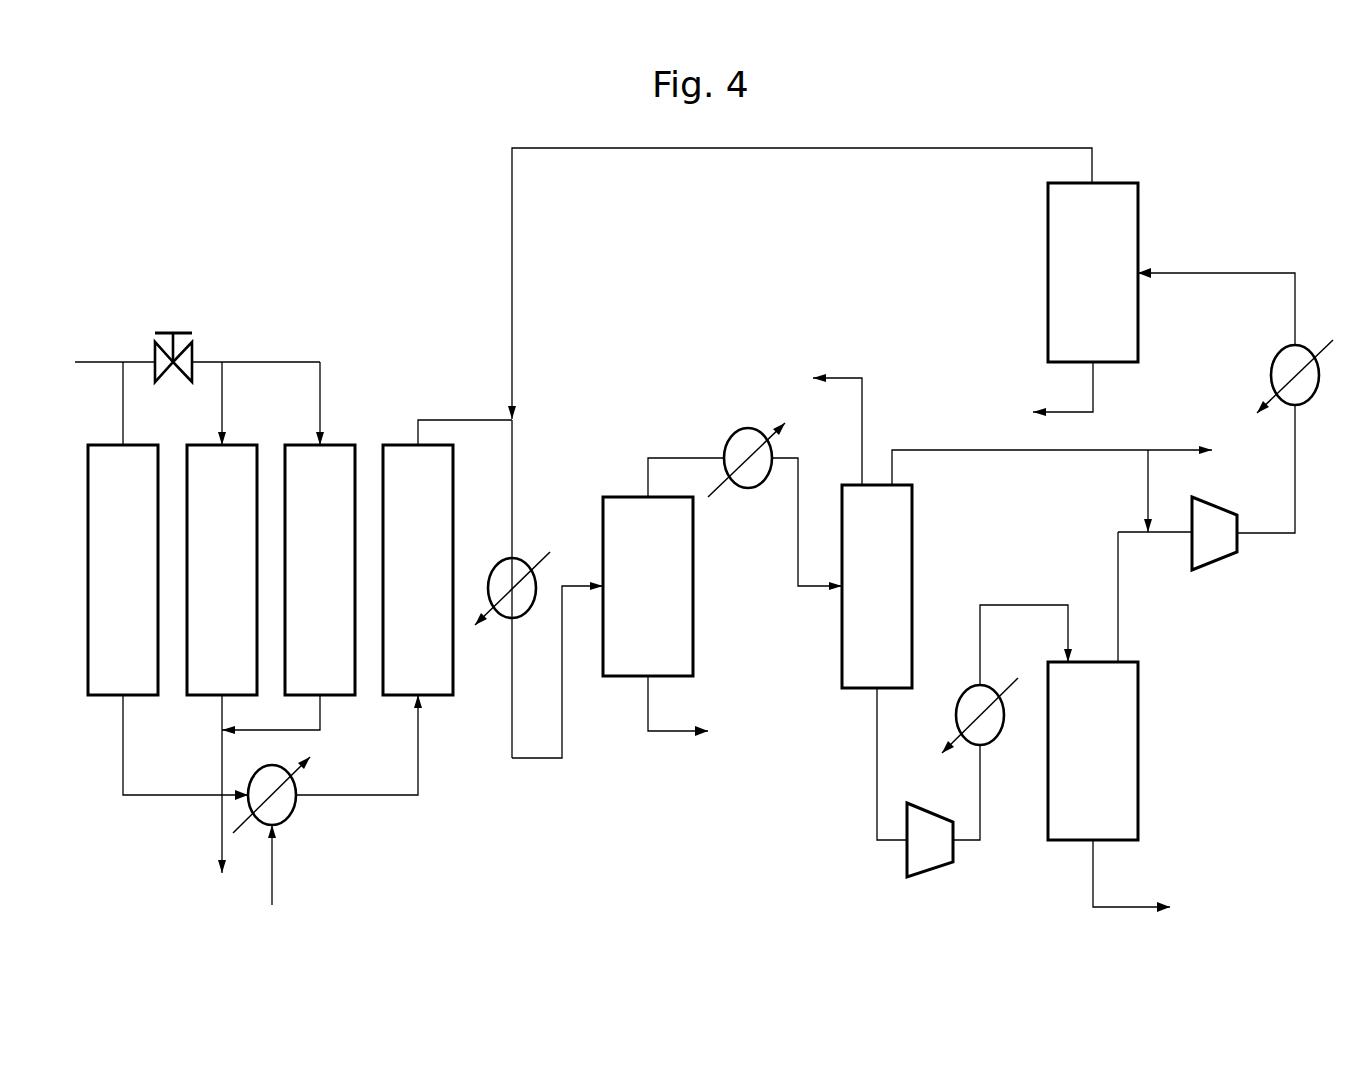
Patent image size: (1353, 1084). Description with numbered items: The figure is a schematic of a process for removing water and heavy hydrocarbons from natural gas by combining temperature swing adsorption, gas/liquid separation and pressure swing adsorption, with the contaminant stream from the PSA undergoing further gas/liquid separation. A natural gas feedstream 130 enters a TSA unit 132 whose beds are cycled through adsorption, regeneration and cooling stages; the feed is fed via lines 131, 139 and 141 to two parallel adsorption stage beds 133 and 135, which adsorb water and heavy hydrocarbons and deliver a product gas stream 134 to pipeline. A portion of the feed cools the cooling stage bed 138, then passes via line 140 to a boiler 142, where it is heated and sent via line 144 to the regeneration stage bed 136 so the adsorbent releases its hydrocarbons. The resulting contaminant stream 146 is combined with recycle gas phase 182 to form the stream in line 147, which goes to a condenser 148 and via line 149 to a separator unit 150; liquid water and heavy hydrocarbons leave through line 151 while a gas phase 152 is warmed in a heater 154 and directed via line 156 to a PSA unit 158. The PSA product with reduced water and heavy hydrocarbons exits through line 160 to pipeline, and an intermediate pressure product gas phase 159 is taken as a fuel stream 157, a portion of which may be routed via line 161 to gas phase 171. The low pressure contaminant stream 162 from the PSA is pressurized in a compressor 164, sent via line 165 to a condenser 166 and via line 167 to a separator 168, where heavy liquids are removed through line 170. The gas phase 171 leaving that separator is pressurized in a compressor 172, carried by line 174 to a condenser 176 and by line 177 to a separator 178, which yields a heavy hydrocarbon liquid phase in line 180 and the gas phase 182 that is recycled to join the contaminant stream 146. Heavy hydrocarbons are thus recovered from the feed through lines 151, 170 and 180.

The natural gas feedstream 130 is at (114, 336).
The line 131 is at (191, 346).
The TSA unit 132 is at (239, 380).
The adsorption stage bed 133 is at (222, 570).
The product gas stream 134 is at (242, 784).
The adsorption stage bed 135 is at (320, 570).
The regeneration stage bed 136 is at (418, 570).
The cooling stage bed 138 is at (123, 570).
The line 139 is at (256, 403).
The line 140 is at (156, 747).
The line 141 is at (350, 403).
The boiler 142 is at (287, 831).
The line 144 is at (359, 772).
The contaminant stream 146 is at (465, 407).
The line 147 is at (543, 589).
The condenser 148 is at (508, 571).
The line 149 is at (567, 670).
The separator unit 150 is at (679, 586).
The line 151 is at (678, 729).
The gas phase 152 is at (686, 452).
The heater 154 is at (746, 439).
The line 156 is at (790, 524).
The fuel stream 157 is at (1131, 426).
The PSA unit 158 is at (906, 586).
The intermediate pressure product gas phase 159 is at (971, 442).
The line 160 is at (867, 429).
The line 161 is at (1139, 491).
The low pressure contaminant stream 162 is at (861, 764).
The compressor 164 is at (930, 862).
The line 165 is at (950, 792).
The condenser 166 is at (976, 698).
The line 167 is at (1026, 618).
The separator 168 is at (1124, 751).
The line 170 is at (1131, 876).
The gas phase 171 is at (1147, 597).
The compressor 172 is at (1214, 555).
The line 174 is at (1264, 469).
The condenser 176 is at (1275, 373).
The line 177 is at (1216, 282).
The separator 178 is at (1123, 272).
The line 180 is at (1093, 389).
The gas phase 182 is at (800, 283).